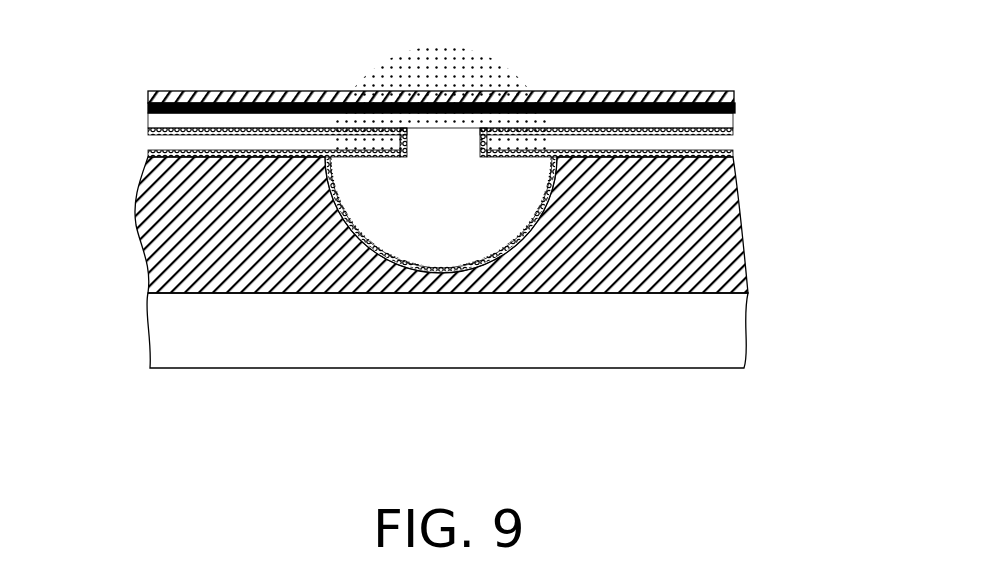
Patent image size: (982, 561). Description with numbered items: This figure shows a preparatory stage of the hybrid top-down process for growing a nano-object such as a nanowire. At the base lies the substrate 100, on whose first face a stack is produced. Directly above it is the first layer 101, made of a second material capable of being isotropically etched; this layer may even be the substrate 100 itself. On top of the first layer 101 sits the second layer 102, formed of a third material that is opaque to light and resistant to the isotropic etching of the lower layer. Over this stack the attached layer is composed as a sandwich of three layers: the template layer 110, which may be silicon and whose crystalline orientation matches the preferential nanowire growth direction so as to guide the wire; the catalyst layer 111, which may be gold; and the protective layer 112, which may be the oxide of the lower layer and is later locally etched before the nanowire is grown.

The substrate 100 is at (727, 333).
The first layer 101 is at (703, 221).
The second layer 102 is at (723, 140).
The template layer 110 is at (723, 124).
The catalyst layer 111 is at (735, 109).
The protective layer 112 is at (735, 97).